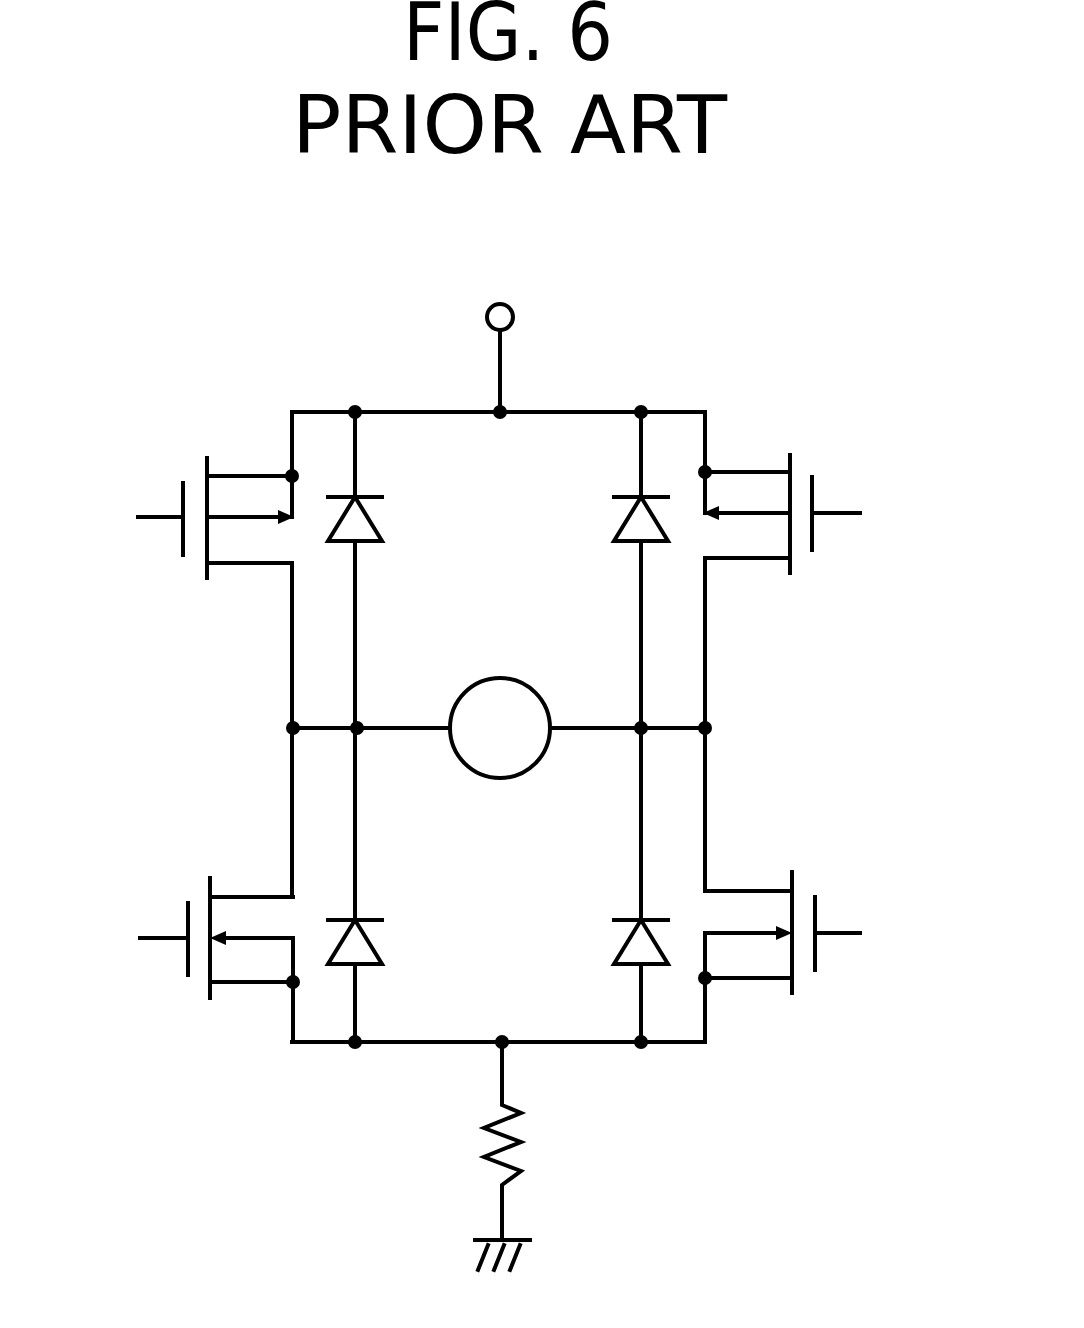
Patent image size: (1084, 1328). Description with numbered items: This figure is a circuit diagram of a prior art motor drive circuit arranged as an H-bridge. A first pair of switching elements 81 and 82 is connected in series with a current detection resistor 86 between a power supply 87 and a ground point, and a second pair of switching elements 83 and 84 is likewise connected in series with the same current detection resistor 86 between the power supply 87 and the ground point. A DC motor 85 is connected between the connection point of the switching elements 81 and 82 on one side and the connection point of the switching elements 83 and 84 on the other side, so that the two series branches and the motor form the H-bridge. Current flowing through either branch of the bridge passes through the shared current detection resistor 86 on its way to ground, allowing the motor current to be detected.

The switching element 81 is at (194, 481).
The switching element 82 is at (198, 900).
The switching element 83 is at (800, 478).
The switching element 84 is at (802, 898).
The DC motor 85 is at (505, 778).
The current detection resistor 86 is at (515, 1147).
The power supply 87 is at (513, 310).